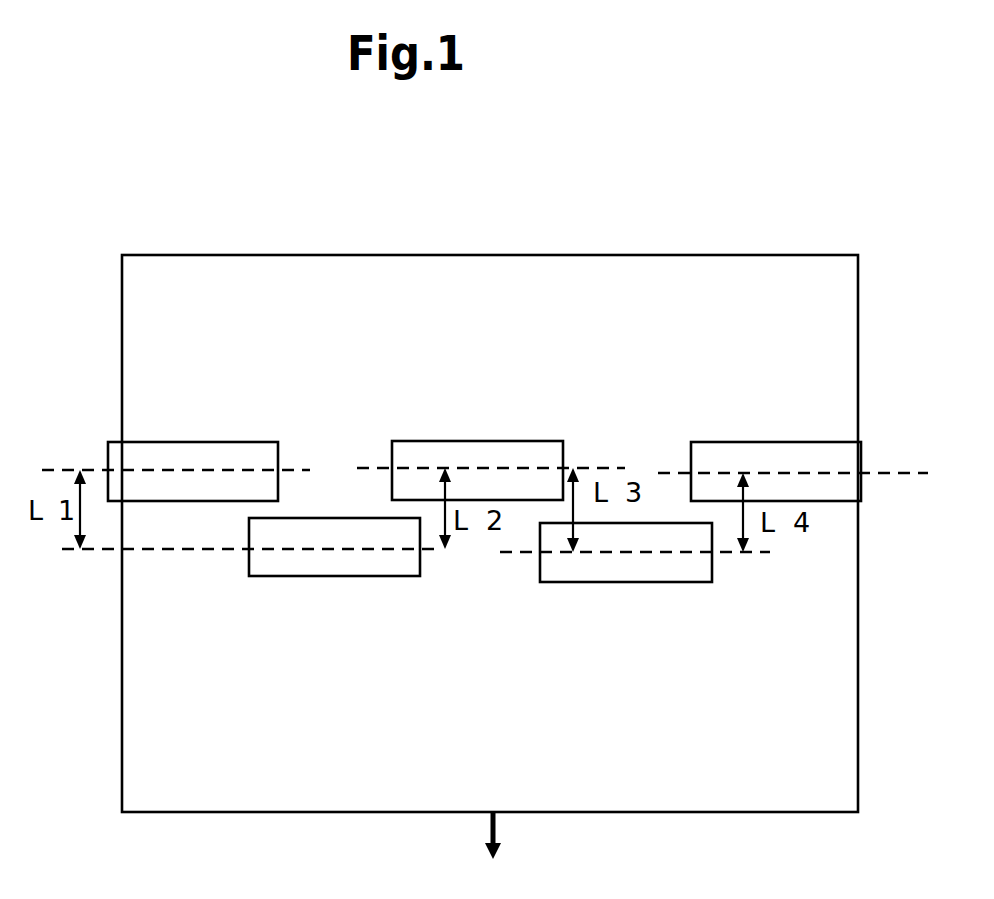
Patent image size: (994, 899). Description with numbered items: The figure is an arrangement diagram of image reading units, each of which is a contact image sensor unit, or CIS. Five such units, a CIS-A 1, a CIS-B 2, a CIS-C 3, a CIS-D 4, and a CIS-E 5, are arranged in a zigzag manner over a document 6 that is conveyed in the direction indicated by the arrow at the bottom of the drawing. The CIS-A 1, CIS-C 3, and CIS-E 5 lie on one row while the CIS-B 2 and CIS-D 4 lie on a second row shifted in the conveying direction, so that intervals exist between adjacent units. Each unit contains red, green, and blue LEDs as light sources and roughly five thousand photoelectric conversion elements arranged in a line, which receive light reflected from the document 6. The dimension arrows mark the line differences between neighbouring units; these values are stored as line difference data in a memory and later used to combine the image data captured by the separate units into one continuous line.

The CIS-A 1 is at (182, 440).
The CIS-B 2 is at (312, 577).
The CIS-C 3 is at (493, 445).
The CIS-D 4 is at (635, 583).
The CIS-E 5 is at (802, 442).
The document 6 is at (588, 812).